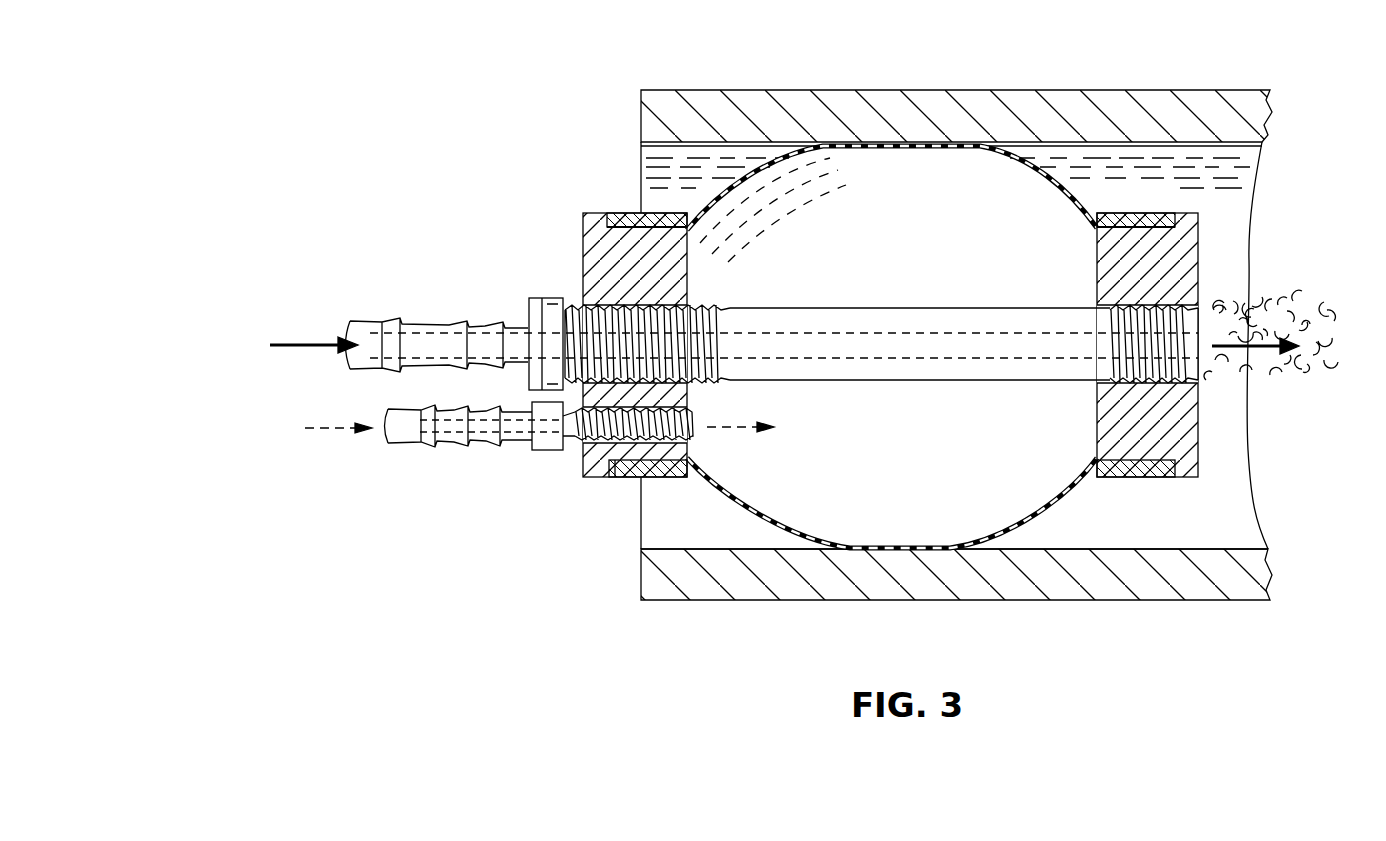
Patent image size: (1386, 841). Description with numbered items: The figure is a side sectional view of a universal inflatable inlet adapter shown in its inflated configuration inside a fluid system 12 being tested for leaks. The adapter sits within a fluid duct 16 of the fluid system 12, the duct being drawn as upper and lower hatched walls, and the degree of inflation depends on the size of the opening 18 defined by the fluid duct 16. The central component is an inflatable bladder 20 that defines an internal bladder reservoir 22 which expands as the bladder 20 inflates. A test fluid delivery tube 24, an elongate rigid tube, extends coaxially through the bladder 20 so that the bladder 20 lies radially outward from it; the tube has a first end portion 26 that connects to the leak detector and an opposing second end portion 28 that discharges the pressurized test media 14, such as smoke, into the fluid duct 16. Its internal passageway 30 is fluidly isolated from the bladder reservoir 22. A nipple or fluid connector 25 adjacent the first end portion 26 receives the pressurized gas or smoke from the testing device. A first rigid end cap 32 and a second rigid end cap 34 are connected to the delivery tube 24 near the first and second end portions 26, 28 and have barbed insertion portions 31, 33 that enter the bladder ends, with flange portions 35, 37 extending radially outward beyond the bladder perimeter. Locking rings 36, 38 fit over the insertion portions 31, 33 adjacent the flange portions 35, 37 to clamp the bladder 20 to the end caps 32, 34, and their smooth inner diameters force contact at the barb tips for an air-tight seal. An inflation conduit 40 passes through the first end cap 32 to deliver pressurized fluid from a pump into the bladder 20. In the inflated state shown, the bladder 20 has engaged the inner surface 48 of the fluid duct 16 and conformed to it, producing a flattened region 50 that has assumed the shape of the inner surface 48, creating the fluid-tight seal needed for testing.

The fluid system 12 is at (1227, 73).
The test media 14 is at (1323, 311).
The fluid duct 16 is at (1207, 590).
The opening 18 is at (1217, 199).
The inflatable bladder 20 is at (1050, 508).
The internal bladder reservoir 22 is at (880, 185).
The test fluid delivery tube 24 is at (890, 323).
The fluid connector 25 is at (427, 328).
The first end portion 26 is at (568, 306).
The second end portion 28 is at (1190, 373).
The internal passageway 30 is at (778, 327).
The insertion portion 31 is at (667, 278).
The first rigid end cap 32 is at (583, 225).
The insertion portion 33 is at (1115, 418).
The second rigid end cap 34 is at (1196, 284).
The flange portion 35 is at (590, 467).
The locking ring 36 is at (623, 477).
The flange portion 37 is at (1193, 467).
The locking ring 38 is at (1143, 470).
The inflation conduit 40 is at (548, 449).
The inner surface 48 is at (1222, 548).
The flattened region 50 is at (855, 531).